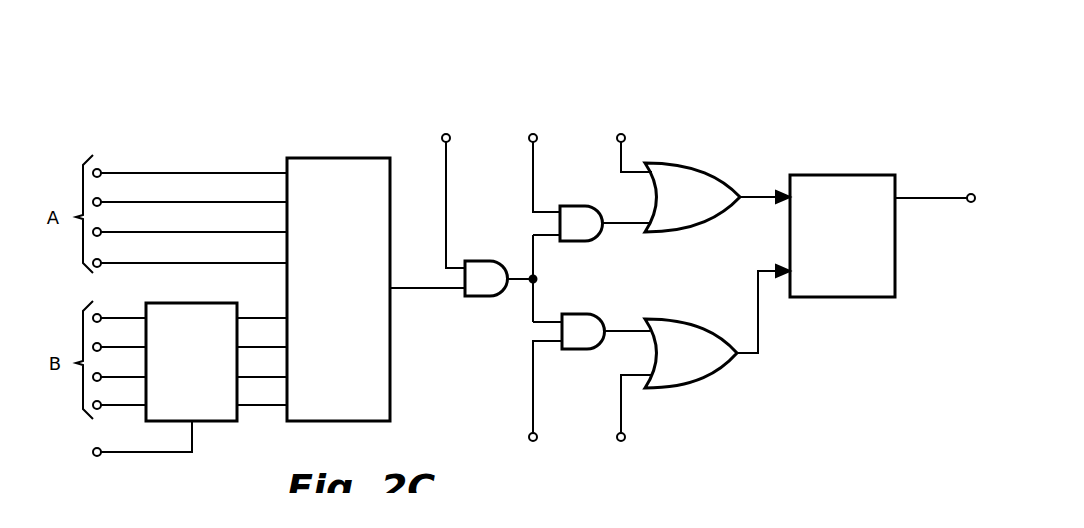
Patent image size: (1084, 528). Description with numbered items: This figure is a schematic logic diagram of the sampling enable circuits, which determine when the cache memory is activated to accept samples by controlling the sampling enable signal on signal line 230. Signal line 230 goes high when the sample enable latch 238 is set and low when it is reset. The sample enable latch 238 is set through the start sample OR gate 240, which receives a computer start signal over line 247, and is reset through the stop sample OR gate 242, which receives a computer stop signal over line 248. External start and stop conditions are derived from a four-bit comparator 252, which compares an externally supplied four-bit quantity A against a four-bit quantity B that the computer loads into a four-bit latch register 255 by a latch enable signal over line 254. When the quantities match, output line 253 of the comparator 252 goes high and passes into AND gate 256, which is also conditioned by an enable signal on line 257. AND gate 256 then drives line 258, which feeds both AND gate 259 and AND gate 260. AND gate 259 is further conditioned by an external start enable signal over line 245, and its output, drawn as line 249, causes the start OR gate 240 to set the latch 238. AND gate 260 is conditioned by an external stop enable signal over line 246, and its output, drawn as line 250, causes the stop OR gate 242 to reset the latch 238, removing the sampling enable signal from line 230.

The signal line 230 is at (920, 198).
The sample enable latch 238 is at (828, 175).
The start sample OR gate 240 is at (690, 163).
The stop sample OR gate 242 is at (685, 388).
The external start enable signal line 245 is at (531, 150).
The external stop enable signal line 246 is at (531, 385).
The computer start signal line 247 is at (619, 150).
The computer stop signal line 248 is at (619, 385).
The AND gate output line to START gate 249 is at (628, 226).
The AND gate output line to STOP gate 250 is at (620, 320).
The 4-bit comparator 252 is at (320, 158).
The output line 253 is at (426, 287).
The latch enable signal line 254 is at (168, 455).
The 4-bit latch register 255 is at (188, 303).
The AND gate 256 is at (481, 261).
The enable signal line 257 is at (444, 150).
The output line 258 is at (520, 282).
The AND gate 259 is at (573, 206).
The AND gate 260 is at (580, 314).